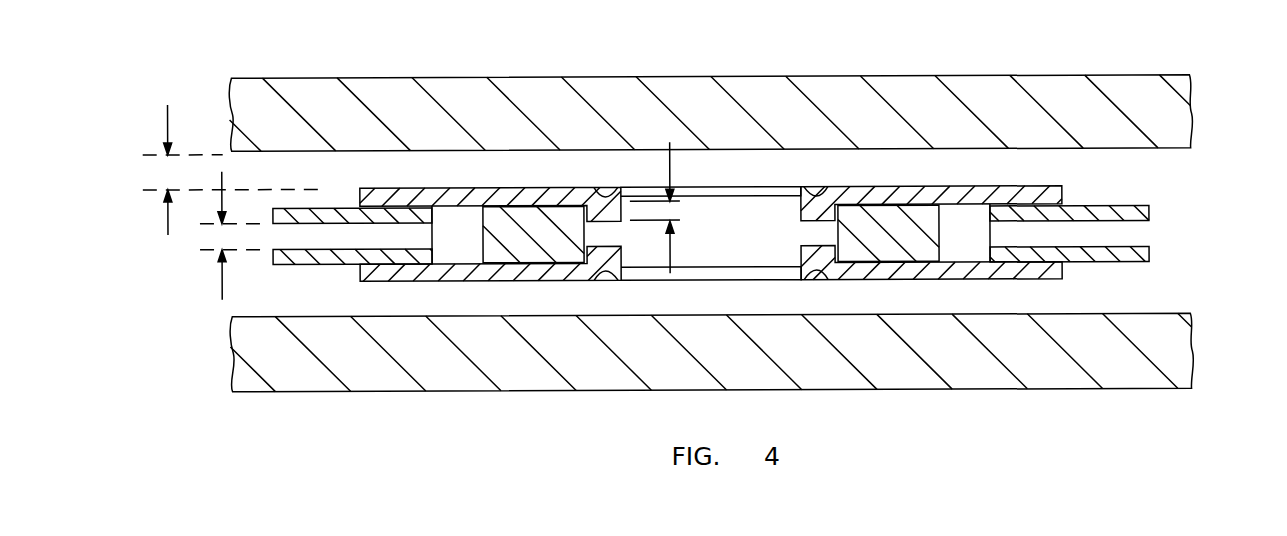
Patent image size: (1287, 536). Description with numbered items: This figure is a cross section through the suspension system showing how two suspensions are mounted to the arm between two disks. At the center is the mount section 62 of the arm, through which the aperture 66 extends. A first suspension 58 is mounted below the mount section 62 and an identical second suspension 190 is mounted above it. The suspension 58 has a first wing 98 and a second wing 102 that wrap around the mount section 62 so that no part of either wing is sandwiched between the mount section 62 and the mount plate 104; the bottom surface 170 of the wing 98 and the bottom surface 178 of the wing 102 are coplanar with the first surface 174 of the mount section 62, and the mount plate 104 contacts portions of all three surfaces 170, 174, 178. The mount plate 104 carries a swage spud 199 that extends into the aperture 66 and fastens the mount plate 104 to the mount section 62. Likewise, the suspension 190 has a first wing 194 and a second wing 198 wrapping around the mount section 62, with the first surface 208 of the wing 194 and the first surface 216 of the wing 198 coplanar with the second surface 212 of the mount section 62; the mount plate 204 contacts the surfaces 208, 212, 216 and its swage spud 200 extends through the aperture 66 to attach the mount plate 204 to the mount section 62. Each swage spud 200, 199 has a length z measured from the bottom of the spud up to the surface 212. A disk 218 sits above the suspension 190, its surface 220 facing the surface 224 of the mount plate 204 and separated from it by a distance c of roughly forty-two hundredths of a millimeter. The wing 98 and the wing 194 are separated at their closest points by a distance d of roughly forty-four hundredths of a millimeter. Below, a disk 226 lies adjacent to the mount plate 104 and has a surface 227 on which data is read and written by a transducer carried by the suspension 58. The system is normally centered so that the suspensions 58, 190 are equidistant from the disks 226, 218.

The disk 218 is at (1180, 118).
The surface of the disk 220 is at (1188, 146).
The disk 226 is at (297, 383).
The surface of the disk 227 is at (1188, 313).
The first surface of the wing 208 is at (331, 205).
The first surface of the wing 216 is at (1090, 197).
The bottom surface of the wing 170 is at (331, 263).
The bottom surface of the wing 178 is at (1092, 262).
The mount plate 204 is at (563, 187).
The swage spud 199 is at (802, 265).
The second surface of the mount section 212 is at (547, 186).
The surface of the mount plate 224 is at (461, 186).
The swage spud 200 is at (627, 186).
The aperture 66 is at (753, 207).
The first wing 194 is at (310, 206).
The first wing 98 is at (310, 264).
The second wing 198 is at (1110, 197).
The second wing 102 is at (1110, 258).
The second suspension 190 is at (1168, 207).
The suspension 58 is at (1168, 253).
The mount section 62 is at (480, 217).
The first surface of the mount section 174 is at (498, 257).
The mount plate 104 is at (472, 283).
The distance c is at (150, 170).
The distance d is at (203, 233).
The length z is at (694, 207).